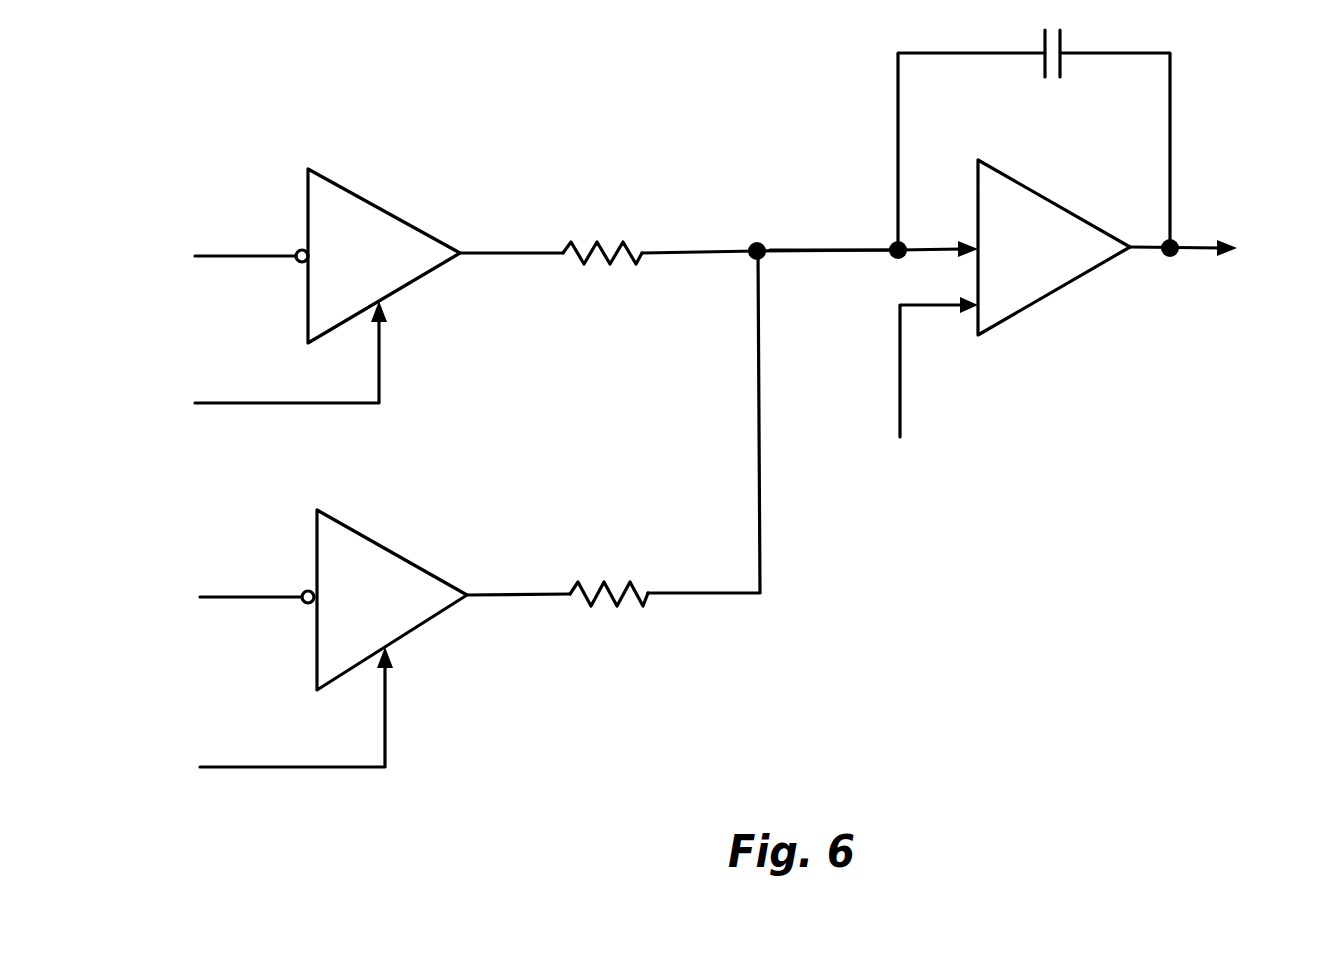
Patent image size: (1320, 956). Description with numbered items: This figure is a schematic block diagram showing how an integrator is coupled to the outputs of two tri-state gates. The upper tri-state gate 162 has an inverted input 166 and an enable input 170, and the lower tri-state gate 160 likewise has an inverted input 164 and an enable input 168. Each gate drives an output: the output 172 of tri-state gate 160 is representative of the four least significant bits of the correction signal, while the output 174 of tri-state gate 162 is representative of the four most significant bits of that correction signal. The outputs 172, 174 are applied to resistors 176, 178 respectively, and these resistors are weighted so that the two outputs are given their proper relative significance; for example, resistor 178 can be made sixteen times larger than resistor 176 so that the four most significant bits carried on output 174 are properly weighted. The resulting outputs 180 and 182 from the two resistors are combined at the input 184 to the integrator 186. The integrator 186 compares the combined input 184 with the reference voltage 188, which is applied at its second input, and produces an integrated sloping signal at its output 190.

The tri-state gate 160 is at (415, 628).
The tri-state gate 162 is at (410, 283).
The inverted input 164 is at (262, 597).
The inverted input 166 is at (256, 256).
The enable input 168 is at (360, 767).
The enable input 170 is at (365, 403).
The output 172 is at (513, 595).
The output 174 is at (488, 253).
The resistor 176 is at (610, 606).
The resistor 178 is at (612, 264).
The output 180 is at (760, 508).
The output 182 is at (708, 253).
The input 184 is at (852, 252).
The integrator 186 is at (1023, 309).
The reference voltage 188 is at (900, 349).
The output 190 is at (1193, 250).